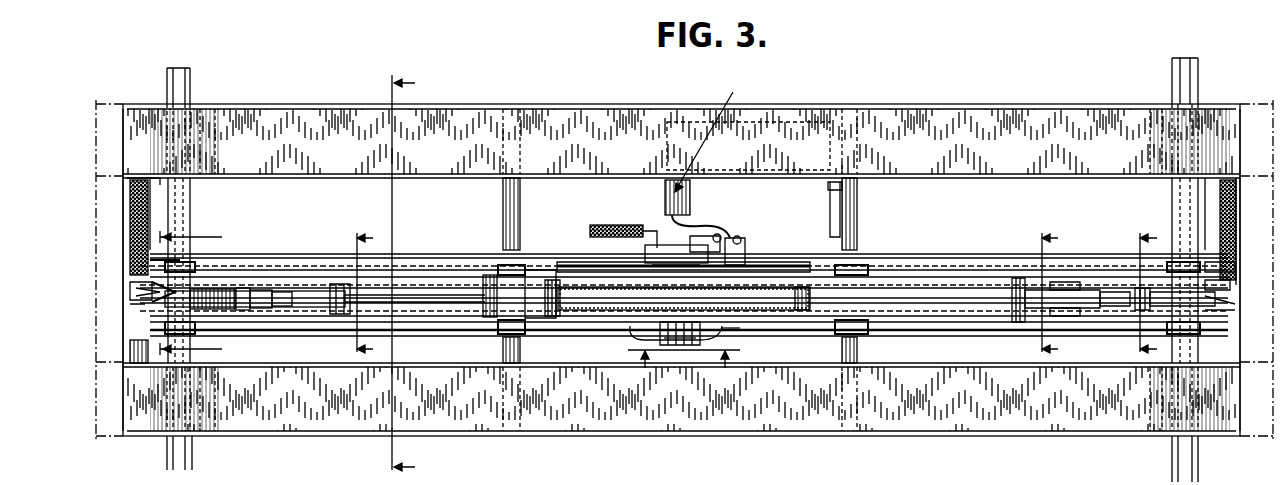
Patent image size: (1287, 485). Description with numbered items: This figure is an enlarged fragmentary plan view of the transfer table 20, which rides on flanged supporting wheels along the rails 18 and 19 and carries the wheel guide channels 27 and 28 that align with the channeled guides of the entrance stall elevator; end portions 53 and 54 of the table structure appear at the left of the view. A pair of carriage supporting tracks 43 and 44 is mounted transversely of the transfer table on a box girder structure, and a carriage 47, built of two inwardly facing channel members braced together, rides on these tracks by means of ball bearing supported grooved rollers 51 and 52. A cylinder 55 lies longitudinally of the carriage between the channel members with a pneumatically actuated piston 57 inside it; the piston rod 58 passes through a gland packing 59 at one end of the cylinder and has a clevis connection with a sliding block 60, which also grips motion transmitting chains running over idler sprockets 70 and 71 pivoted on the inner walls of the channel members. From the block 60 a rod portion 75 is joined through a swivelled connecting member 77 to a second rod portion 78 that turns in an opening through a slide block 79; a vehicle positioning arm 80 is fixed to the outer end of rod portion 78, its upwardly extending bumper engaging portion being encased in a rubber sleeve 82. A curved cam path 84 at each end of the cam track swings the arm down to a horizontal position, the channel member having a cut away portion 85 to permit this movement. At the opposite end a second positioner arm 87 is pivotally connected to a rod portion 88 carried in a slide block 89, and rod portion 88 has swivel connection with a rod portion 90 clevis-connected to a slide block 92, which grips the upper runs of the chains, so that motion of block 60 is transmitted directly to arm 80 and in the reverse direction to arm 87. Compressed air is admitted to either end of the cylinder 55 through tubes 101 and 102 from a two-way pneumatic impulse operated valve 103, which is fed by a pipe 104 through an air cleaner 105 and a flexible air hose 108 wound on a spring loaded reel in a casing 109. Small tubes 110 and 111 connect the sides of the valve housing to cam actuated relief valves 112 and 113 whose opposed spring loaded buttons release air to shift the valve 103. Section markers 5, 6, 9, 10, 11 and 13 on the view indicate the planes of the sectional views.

The section line 5- 5 is at (413, 275).
The section line 6- 6 is at (684, 371).
The section line 9- 9 is at (1040, 294).
The section line 10- 10 is at (350, 294).
The section line 11- 11 is at (1134, 294).
The section line 13- 13 is at (202, 293).
The rail 18 is at (189, 85).
The rail 19 is at (1180, 76).
The transfer table 20 is at (937, 104).
The channel 27 is at (273, 420).
The channel 28 is at (307, 117).
The carriage supporting track 43 is at (432, 328).
The carriage supporting track 44 is at (422, 265).
The carriage 47 is at (898, 280).
The grooved roller 51 is at (516, 326).
The grooved roller 52 is at (503, 266).
The lower packing 53 is at (122, 351).
The upper packing 54 is at (128, 226).
The cylinder 55 is at (762, 298).
The piston 57 is at (556, 283).
The piston rod 58 is at (402, 295).
The gland packing 59 is at (546, 284).
The sliding block 60 is at (342, 285).
The idler sprocket 70 is at (303, 325).
The idler sprocket 71 is at (1070, 326).
The rod portion 75 is at (284, 292).
The swivelled connecting member 77 is at (262, 290).
The second rod portion 78 is at (243, 288).
The slide block 79 is at (235, 306).
The vehicle positioning arm 80 is at (130, 291).
The rubber sleeve 82 is at (1242, 212).
The curved cam path 84 is at (1225, 286).
The cut away portion 85 is at (162, 268).
The second positioner arm 87 is at (1248, 268).
The rod portion 88 is at (1225, 302).
The slide block 89 is at (1112, 270).
The rod portion 90 is at (1075, 298).
The slide block 92 is at (1015, 290).
The tube 101 is at (578, 262).
The tube 102 is at (788, 262).
The two-way pneumatic valve 103 is at (668, 250).
The pipe 104 is at (690, 232).
The air cleaner 105 is at (734, 238).
The flexible air hose 108 is at (707, 228).
The casing 109 is at (717, 130).
The small tube 110 is at (628, 330).
The small tube 111 is at (730, 328).
The cam actuated relief valve 112 is at (665, 336).
The cam actuated relief valve 113 is at (692, 336).